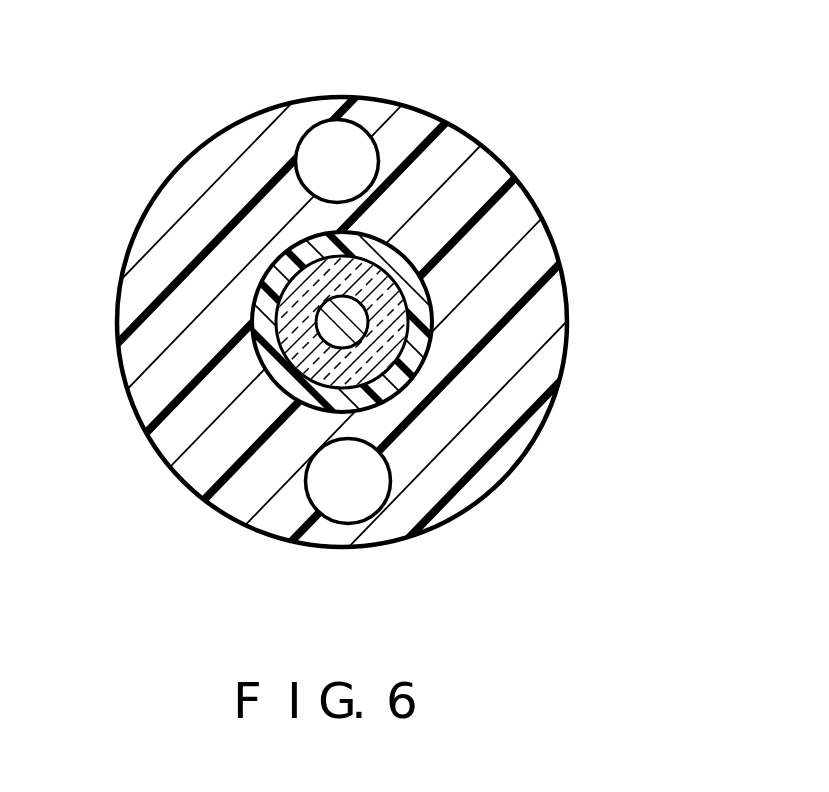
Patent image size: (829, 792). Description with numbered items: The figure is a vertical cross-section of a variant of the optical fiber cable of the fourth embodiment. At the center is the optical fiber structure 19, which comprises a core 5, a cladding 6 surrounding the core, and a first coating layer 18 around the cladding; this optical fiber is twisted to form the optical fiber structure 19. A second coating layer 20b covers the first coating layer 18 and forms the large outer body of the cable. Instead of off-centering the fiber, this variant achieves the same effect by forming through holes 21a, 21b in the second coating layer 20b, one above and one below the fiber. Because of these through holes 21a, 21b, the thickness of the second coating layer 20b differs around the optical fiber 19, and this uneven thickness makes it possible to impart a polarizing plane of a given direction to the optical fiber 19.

The core 5 is at (355, 327).
The cladding 6 is at (387, 308).
The first coating layer 18 is at (420, 359).
The optical fiber structure 19 is at (438, 333).
The second coating layer 20b is at (490, 472).
The through hole 21a is at (342, 136).
The through hole 21b is at (348, 505).